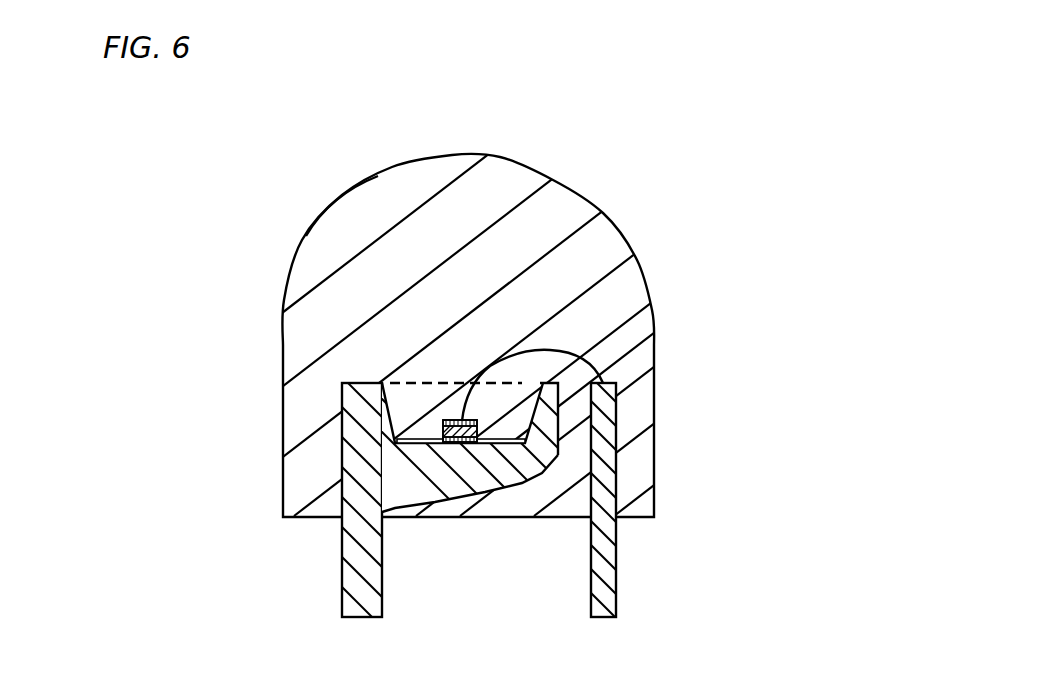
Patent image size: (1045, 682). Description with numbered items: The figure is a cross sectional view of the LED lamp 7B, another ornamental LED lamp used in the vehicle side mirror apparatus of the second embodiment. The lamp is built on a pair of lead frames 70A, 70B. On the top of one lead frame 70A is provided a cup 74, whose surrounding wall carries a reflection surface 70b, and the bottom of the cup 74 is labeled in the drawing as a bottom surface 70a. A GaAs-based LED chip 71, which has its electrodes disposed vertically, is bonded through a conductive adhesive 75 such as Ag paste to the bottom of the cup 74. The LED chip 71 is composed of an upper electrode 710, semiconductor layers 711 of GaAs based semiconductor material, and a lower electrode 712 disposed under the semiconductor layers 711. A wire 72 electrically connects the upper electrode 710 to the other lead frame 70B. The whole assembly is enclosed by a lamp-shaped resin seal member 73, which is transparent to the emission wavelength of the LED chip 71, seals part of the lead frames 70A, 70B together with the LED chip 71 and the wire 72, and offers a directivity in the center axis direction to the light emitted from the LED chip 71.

The LED lamp 7B is at (532, 143).
The resin seal member 73 is at (567, 203).
The cup 74 is at (483, 393).
The wire 72 is at (592, 360).
The LED chip 71 is at (433, 412).
The reflection surface 70b is at (384, 392).
The upper electrode 710 is at (477, 422).
The semiconductor layers 711 is at (477, 432).
The lower electrode 712 is at (443, 436).
The conductive adhesive 75 is at (527, 445).
The bottom surface 70a is at (342, 477).
The lead frame 70A is at (350, 599).
The lead frame 70B is at (612, 600).